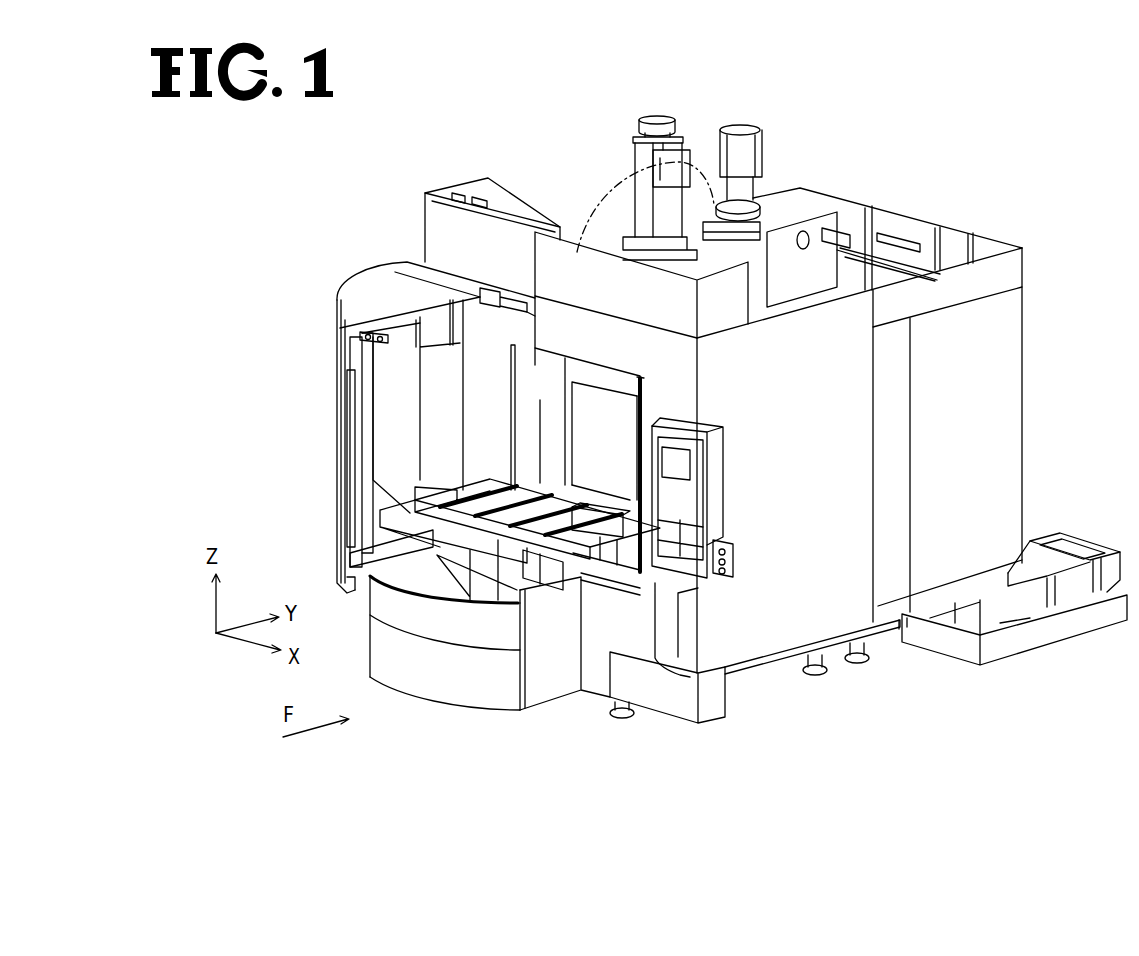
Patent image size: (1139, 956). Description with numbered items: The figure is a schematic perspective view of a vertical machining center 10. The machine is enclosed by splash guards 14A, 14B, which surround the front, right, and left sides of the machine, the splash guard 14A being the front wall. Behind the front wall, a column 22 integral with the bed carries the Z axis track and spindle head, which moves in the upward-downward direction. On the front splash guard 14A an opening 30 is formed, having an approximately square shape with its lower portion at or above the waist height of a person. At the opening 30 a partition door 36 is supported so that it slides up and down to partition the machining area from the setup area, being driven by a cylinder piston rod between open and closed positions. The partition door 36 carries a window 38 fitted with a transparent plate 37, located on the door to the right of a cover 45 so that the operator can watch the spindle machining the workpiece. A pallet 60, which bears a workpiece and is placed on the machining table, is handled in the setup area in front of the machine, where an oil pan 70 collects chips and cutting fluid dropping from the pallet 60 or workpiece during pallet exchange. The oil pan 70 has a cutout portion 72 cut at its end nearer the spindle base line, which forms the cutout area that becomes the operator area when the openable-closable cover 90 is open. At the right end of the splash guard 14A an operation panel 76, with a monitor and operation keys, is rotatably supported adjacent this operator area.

The vertical machining center 10 is at (473, 119).
The splash guard 14A is at (433, 227).
The splash guard 14B is at (488, 180).
The column 22 is at (832, 230).
The opening 30 is at (623, 547).
The partition door 36 is at (607, 383).
The transparent plate 37 is at (643, 413).
The window 38 is at (617, 428).
The cover 45 is at (518, 397).
The pallet 60 is at (458, 490).
The oil pan 70 is at (505, 548).
The cutout portion 72 is at (544, 537).
The operation panel 76 is at (687, 502).
The openable-closable cover 90 is at (338, 427).